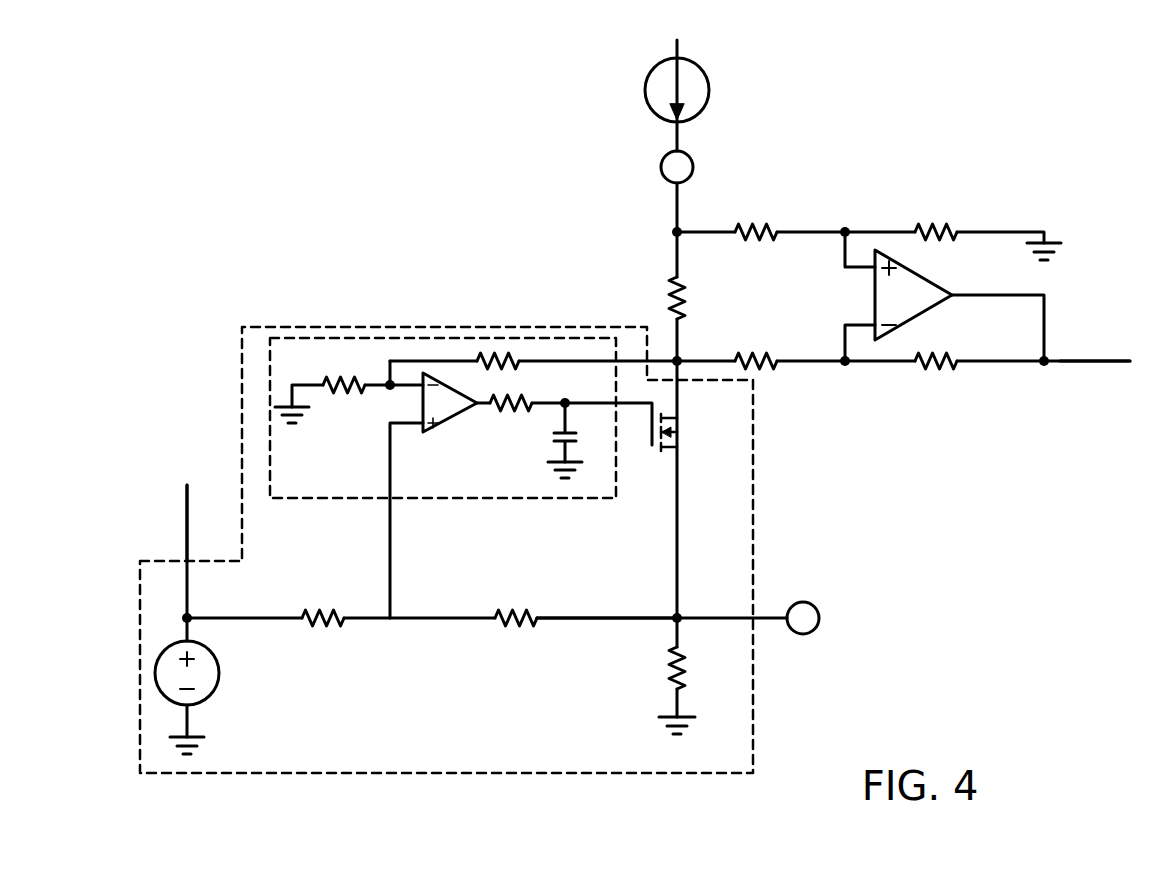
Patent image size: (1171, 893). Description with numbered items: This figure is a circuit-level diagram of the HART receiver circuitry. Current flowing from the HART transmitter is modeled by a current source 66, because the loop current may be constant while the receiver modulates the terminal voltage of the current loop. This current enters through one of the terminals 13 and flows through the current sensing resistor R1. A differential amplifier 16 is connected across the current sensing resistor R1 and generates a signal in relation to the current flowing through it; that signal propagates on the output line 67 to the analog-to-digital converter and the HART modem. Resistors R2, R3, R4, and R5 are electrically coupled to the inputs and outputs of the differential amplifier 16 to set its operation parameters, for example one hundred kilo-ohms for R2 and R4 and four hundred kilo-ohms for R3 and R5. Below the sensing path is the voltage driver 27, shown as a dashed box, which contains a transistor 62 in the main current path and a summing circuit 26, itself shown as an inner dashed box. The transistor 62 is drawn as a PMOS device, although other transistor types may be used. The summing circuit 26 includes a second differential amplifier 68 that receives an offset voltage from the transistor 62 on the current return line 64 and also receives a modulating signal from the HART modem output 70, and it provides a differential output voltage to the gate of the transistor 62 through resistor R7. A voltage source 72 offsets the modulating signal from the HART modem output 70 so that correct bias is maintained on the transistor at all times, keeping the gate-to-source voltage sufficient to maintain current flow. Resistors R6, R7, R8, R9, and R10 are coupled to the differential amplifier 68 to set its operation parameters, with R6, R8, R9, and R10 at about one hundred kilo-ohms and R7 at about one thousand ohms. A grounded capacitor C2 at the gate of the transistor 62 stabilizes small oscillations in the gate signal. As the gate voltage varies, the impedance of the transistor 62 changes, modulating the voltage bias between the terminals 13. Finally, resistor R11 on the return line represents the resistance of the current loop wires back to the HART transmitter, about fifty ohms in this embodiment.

The current source 66 is at (710, 90).
The terminals 13 is at (660, 167).
The current sensing resistor R1 is at (670, 297).
The resistor R2 is at (760, 232).
The resistor R3 is at (940, 232).
The resistor R4 is at (763, 360).
The resistor R5 is at (932, 363).
The differential amplifier 16 is at (915, 303).
The output line 67 is at (1092, 360).
The voltage driver 27 is at (452, 767).
The summing circuit 26 is at (518, 480).
The resistor R6 is at (488, 358).
The resistor R7 is at (491, 406).
The resistor R8 is at (345, 390).
The differential amplifier 68 is at (446, 415).
The grounded capacitor C2 is at (563, 430).
The transistor 62 is at (672, 437).
The HART modem output 70 is at (183, 522).
The voltage source 72 is at (220, 673).
The resistor R9 is at (326, 615).
The resistor R10 is at (520, 615).
The current return line 64 is at (607, 617).
The resistor R11 is at (672, 675).